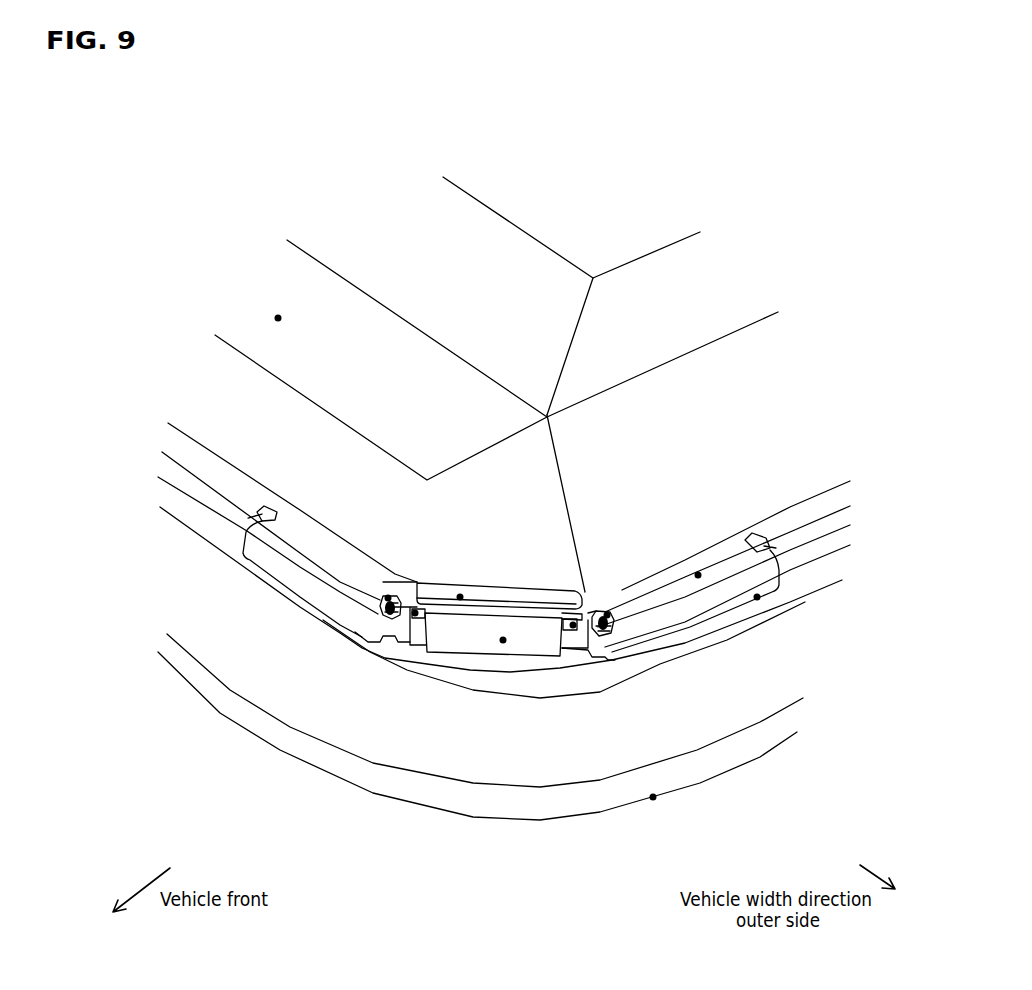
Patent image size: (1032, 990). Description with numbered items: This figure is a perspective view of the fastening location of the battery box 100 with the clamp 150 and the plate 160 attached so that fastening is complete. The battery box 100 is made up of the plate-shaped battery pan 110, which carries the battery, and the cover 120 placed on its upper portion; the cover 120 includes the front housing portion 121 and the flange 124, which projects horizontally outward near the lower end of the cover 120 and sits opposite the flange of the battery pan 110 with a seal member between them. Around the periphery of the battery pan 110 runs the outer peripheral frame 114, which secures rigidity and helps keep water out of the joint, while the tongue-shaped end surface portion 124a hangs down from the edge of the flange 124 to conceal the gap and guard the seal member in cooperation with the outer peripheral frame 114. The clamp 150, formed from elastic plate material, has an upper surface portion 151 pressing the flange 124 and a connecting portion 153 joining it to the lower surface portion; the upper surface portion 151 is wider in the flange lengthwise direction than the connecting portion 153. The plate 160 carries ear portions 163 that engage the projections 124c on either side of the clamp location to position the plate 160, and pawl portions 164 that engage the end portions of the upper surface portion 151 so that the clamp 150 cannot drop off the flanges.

The battery box 100 is at (799, 220).
The battery pan 110 is at (137, 465).
The outer peripheral frame 114 is at (653, 797).
The cover 120 is at (233, 244).
The front housing portion 121 is at (278, 318).
The flange 124 is at (698, 575).
The end surface portion 124a is at (757, 597).
The projection 124c is at (385, 625).
The clamp 150 is at (569, 576).
The upper surface portion 151 is at (460, 597).
The connecting portion 153 is at (503, 640).
The plate 160 is at (610, 600).
The ear portion 163 is at (388, 598).
The pawl portion 164 is at (415, 613).